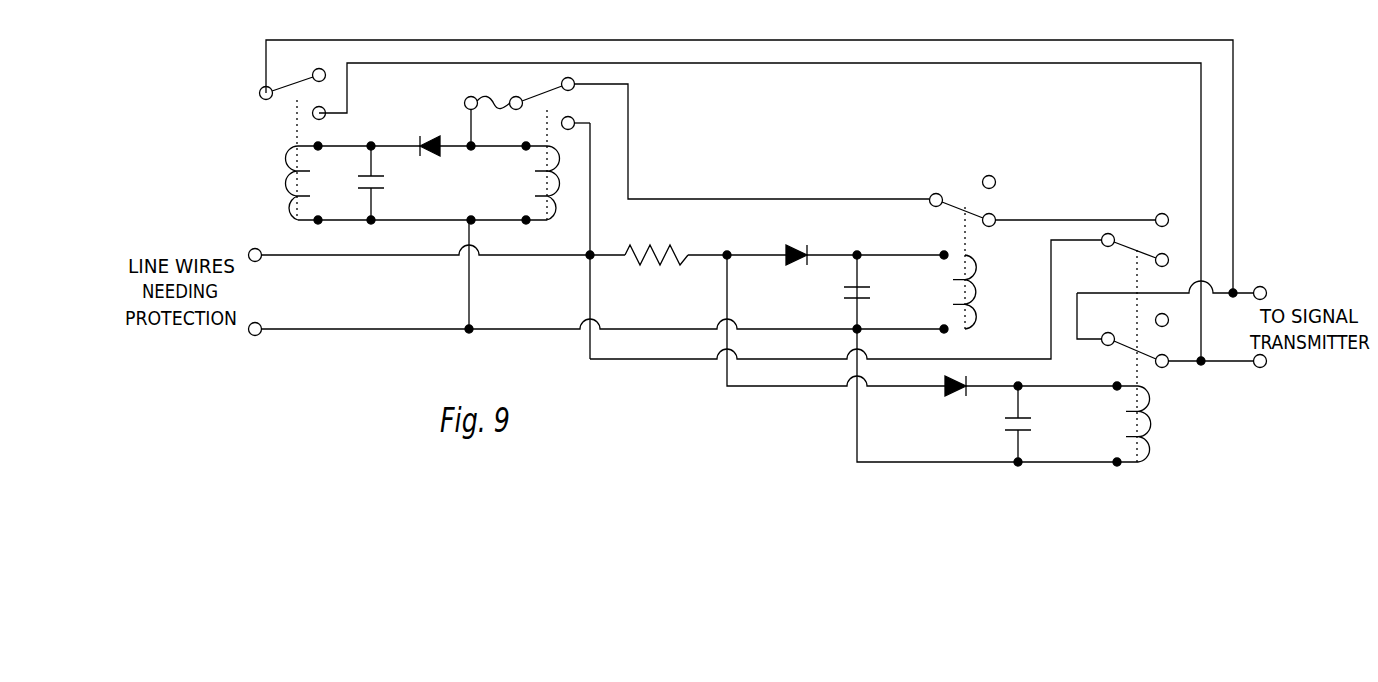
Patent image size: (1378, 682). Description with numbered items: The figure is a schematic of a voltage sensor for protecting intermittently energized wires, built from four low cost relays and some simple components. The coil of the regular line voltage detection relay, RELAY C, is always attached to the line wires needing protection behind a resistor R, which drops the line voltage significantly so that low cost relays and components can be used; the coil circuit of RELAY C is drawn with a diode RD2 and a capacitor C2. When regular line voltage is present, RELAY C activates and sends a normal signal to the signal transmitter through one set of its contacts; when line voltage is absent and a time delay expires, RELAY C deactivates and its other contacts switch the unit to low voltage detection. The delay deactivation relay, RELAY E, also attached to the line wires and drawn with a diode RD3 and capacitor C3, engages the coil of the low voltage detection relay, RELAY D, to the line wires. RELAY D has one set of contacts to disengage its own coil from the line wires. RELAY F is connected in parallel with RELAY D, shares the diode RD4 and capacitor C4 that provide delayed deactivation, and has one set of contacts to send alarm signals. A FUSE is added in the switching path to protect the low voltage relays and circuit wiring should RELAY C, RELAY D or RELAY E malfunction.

The fuse FUSE is at (494, 109).
The rectifier diode RD4 is at (427, 132).
The capacitor C4 is at (388, 183).
The Relay F RELAY F is at (308, 161).
The low voltage detection relay RELAY D is at (711, 165).
The resistor R is at (656, 271).
The rectifier diode RD3 is at (795, 241).
The capacitor C3 is at (873, 295).
The delay deactivation relay RELAY E is at (1042, 268).
The rectifier diode RD2 is at (957, 403).
The capacitor C2 is at (1033, 424).
The regular line voltage detection relay RELAY C is at (1165, 348).